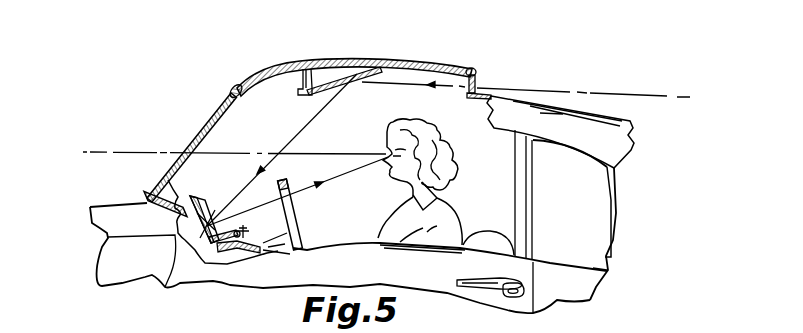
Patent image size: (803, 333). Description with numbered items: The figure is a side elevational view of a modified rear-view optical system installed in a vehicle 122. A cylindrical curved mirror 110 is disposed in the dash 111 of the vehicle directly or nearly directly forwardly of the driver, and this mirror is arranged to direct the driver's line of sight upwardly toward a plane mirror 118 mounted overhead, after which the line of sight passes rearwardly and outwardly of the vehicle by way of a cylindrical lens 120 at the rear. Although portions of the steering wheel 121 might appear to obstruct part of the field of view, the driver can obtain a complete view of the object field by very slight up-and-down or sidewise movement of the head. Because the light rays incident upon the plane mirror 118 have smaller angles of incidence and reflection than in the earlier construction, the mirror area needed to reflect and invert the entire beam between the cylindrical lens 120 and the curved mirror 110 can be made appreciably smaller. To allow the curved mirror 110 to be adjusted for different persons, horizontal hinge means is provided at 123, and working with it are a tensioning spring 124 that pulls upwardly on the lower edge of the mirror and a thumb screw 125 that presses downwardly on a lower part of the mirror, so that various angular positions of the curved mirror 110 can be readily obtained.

The cylindrical curved mirror 110 is at (208, 223).
The dash 111 is at (167, 188).
The plane mirror 118 is at (307, 96).
The cylindrical lens 120 is at (466, 73).
The steering wheel 121 is at (293, 211).
The vehicle 122 is at (588, 281).
The horizontal hinge means 123 is at (190, 201).
The tensioning spring 124 is at (227, 253).
The thumb screw 125 is at (252, 220).